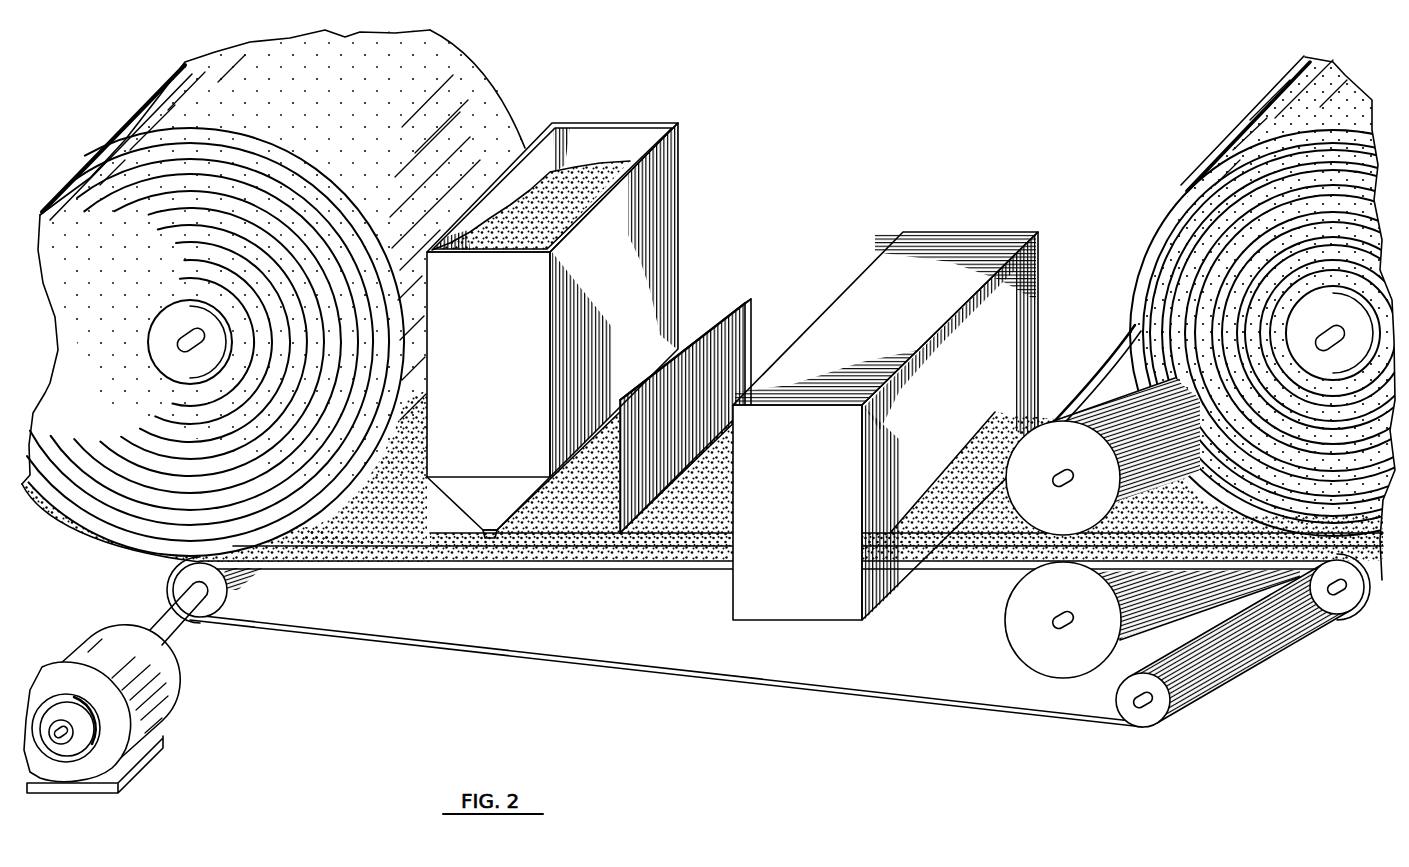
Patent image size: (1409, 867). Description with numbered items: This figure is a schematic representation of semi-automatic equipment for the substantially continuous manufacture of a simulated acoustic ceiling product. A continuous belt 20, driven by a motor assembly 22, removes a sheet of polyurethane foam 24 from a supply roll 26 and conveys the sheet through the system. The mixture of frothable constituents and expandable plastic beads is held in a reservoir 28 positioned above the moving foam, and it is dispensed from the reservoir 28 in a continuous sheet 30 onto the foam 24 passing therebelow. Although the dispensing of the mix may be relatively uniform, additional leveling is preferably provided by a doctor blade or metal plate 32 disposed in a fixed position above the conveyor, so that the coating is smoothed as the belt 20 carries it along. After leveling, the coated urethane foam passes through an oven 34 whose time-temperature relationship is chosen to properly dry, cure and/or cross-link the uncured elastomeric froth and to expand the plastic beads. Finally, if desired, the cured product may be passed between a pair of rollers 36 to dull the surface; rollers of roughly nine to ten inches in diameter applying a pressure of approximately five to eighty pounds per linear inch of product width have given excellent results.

The continuous belt 20 is at (543, 633).
The motor assembly 22 is at (148, 682).
The sheet of polyurethane foam 24 is at (370, 507).
The supply roll 26 is at (453, 92).
The reservoir 28 is at (673, 172).
The continuous sheet 30 is at (488, 540).
The doctor blade or metal plate 32 is at (738, 345).
The oven 34 is at (930, 245).
The pair of rollers 36 is at (1097, 358).